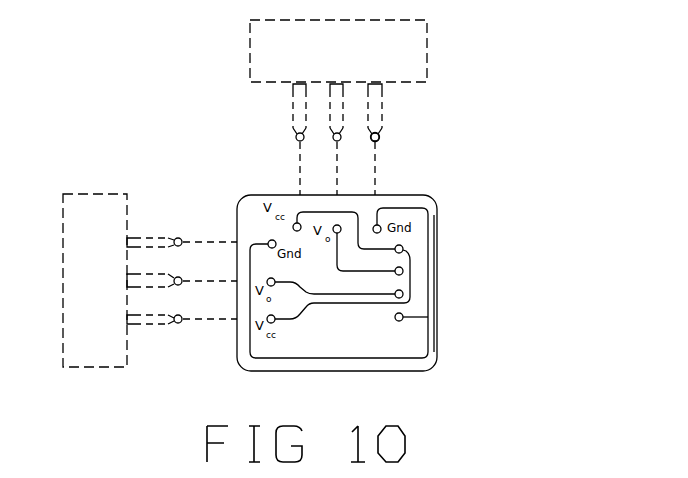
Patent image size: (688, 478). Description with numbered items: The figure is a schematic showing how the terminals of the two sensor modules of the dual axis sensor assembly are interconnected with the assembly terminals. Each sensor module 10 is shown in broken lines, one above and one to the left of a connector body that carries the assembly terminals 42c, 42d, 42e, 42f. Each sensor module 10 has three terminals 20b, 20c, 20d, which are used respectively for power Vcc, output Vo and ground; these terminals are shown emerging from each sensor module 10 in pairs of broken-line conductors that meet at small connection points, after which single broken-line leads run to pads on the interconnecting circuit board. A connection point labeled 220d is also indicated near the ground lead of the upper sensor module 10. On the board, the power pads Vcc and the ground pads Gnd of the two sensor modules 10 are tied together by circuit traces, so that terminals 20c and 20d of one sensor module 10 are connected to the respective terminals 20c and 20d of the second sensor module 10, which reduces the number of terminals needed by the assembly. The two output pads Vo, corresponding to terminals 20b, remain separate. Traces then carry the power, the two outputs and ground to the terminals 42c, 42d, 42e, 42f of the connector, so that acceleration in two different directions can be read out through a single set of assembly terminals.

The sensor module 10 is at (427, 52).
The terminal 20b is at (348, 141).
The terminal 20c is at (289, 139).
The terminal 20d is at (178, 237).
The connector 220d is at (390, 133).
The terminal 42c is at (403, 319).
The terminal 42d is at (403, 294).
The terminal 42e is at (403, 270).
The terminal 42f is at (403, 248).